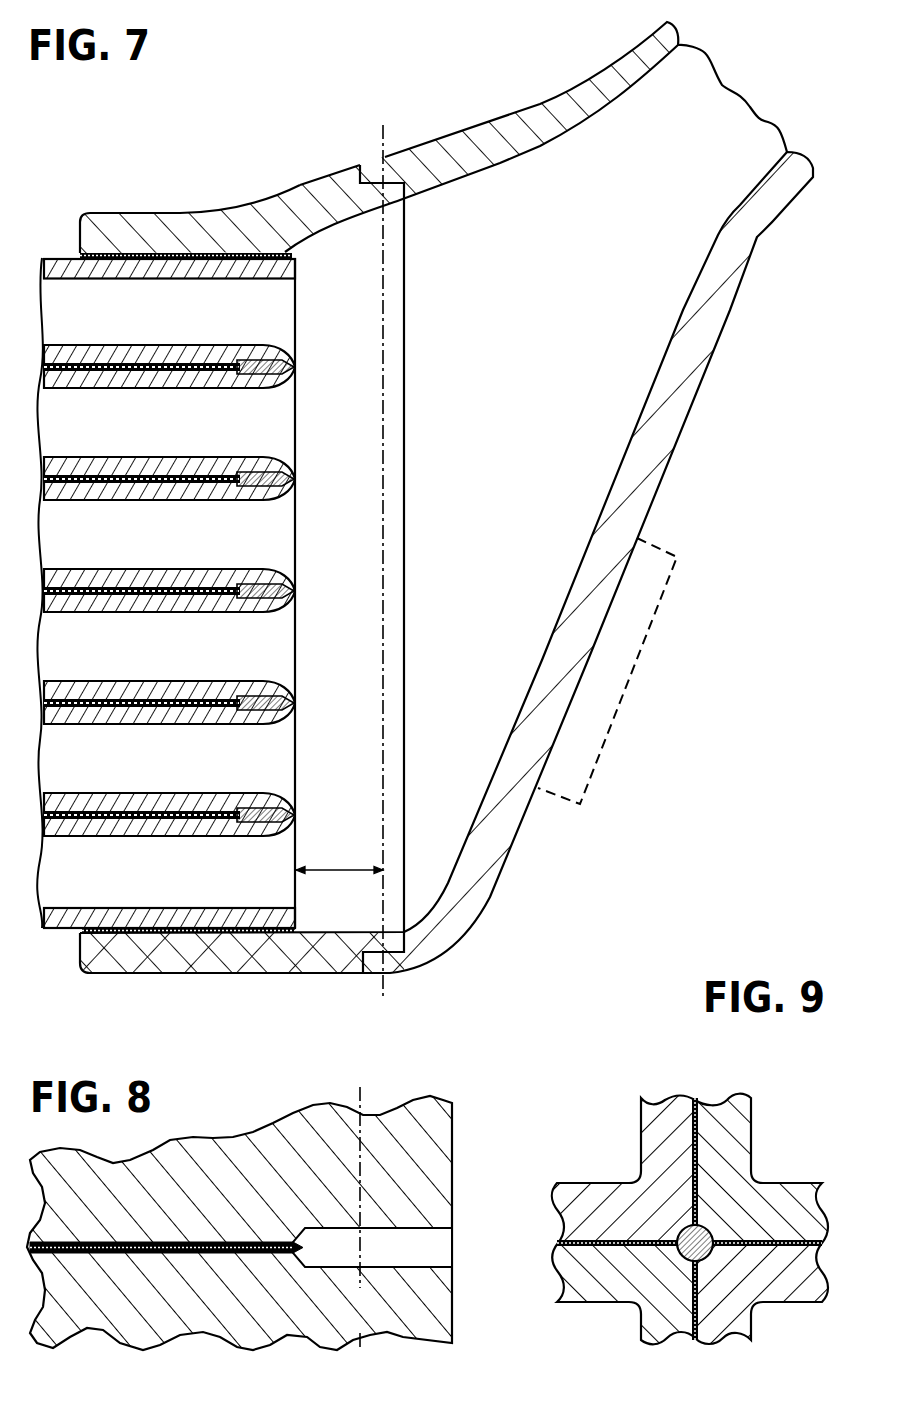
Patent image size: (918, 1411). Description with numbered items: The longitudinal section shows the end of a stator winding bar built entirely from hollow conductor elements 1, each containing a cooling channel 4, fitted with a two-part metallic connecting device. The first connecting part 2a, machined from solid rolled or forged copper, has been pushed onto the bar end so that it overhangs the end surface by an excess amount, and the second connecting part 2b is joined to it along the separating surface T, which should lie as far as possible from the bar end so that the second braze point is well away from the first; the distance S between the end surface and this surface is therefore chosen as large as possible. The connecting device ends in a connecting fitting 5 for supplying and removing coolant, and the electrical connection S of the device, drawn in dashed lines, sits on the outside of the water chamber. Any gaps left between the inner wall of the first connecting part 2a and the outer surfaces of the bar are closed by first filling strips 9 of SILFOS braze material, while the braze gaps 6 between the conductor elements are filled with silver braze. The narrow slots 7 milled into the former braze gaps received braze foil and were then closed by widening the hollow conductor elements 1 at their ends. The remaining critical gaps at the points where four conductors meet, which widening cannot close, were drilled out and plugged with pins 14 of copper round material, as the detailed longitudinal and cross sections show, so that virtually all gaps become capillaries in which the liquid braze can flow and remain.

In FIG. 8, the hollow conductor elements 1 is at (272, 1303).
In FIG. 9, the hollow conductor elements 1 is at (628, 1275).
In FIG. 7, the first connecting part 2a is at (118, 235).
In FIG. 7, the second connecting part 2b is at (677, 380).
In FIG. 7, the cooling channels 4 is at (157, 324).
In FIG. 7, the connecting fitting 5 is at (651, 50).
In FIG. 7, the braze gaps 6 is at (230, 255).
In FIG. 7, the slots 7 is at (296, 477).
In FIG. 8, the first filling strips 9 is at (200, 1222).
In FIG. 8, the pins 14 is at (390, 1248).
In FIG. 9, the pins 14 is at (657, 1283).
In FIG. 7, the separating surface T is at (383, 530).
In FIG. 7, the electrical connection S is at (722, 697).